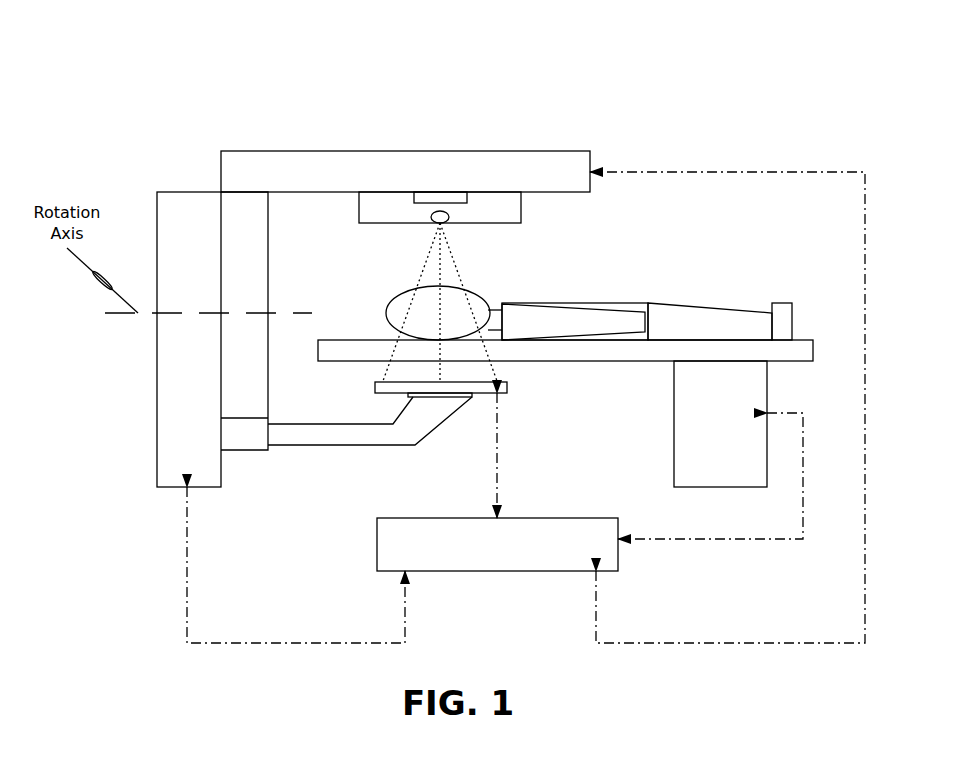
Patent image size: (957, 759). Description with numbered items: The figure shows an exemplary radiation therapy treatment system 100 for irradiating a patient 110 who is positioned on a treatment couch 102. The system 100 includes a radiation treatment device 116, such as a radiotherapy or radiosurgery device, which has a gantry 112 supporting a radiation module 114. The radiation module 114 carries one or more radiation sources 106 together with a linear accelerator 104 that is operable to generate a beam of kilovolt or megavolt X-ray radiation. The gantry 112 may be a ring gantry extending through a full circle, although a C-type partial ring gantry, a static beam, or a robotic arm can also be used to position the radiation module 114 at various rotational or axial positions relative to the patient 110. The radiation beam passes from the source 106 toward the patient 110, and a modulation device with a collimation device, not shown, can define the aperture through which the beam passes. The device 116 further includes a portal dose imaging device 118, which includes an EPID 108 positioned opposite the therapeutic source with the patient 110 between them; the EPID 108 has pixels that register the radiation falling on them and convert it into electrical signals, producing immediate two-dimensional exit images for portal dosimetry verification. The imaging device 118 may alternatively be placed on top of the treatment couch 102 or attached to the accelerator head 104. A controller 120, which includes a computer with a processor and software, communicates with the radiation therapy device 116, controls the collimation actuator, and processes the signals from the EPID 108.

The radiation therapy treatment system 100 is at (808, 103).
The treatment couch 102 is at (717, 338).
The linear accelerator 104 is at (440, 192).
The radiation source 106 is at (430, 224).
The EPID 108 is at (508, 394).
The patient 110 is at (625, 303).
The gantry 112 is at (221, 170).
The radiation module 114 is at (508, 203).
The radiation treatment device 116 is at (158, 448).
The portal dose imaging device 118 is at (397, 435).
The controller 120 is at (400, 545).